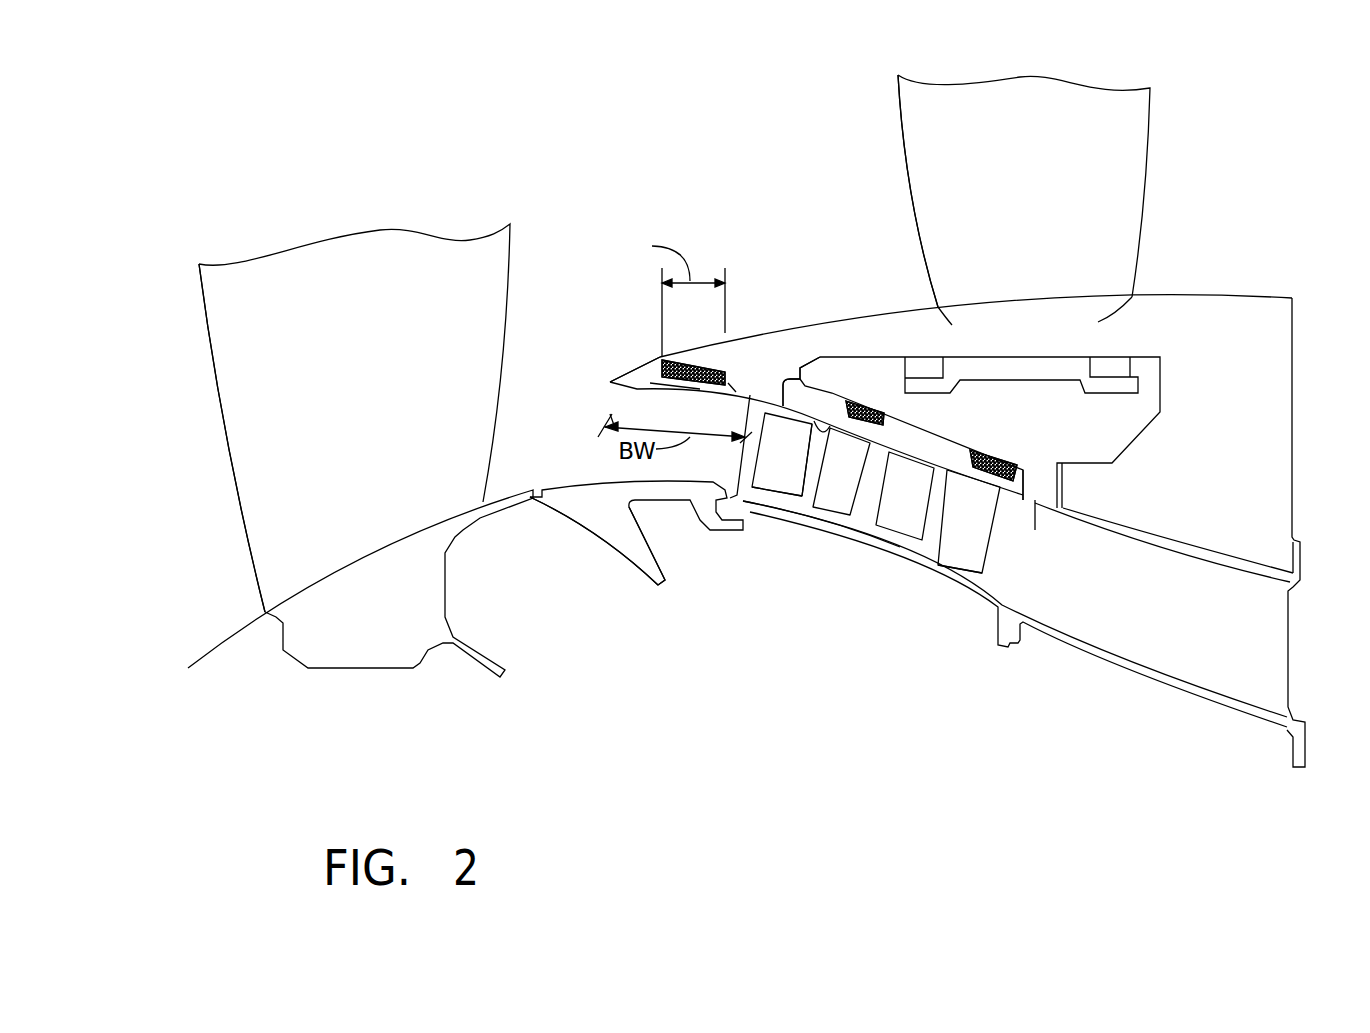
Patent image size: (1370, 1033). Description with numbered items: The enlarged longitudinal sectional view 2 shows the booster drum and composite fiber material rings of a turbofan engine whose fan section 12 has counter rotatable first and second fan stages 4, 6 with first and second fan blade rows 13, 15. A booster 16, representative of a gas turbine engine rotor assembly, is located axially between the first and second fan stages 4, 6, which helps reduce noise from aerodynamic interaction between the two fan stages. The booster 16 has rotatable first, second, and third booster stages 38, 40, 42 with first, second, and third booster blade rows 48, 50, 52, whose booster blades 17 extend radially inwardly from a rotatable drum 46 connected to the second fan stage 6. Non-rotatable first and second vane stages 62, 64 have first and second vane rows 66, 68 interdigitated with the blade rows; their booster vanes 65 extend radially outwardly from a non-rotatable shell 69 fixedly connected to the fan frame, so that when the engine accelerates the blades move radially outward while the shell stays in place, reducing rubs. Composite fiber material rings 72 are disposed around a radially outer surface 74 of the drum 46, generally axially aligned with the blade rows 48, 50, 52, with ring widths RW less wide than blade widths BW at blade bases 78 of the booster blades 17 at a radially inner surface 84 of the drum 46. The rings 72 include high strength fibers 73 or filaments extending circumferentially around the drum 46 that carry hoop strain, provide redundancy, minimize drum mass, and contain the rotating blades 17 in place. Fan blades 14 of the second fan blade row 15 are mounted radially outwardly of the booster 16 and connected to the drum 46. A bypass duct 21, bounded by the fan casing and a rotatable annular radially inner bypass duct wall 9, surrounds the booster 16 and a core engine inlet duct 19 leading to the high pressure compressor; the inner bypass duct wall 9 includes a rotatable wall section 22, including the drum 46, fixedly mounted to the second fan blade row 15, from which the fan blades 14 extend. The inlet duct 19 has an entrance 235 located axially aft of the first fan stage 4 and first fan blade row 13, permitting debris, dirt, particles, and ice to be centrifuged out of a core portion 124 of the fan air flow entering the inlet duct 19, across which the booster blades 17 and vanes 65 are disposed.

The turbine section 2 is at (790, 262).
The first fan stage 4 is at (338, 210).
The second fan stage 6 is at (1017, 68).
The radially inner bypass duct wall 9 is at (787, 425).
The fan section 12 is at (657, 107).
The first fan blade row 13 is at (217, 382).
The fan blades 14 is at (355, 386).
The second fan blade row 15 is at (903, 153).
The booster 16 is at (789, 617).
The booster blades 17 is at (675, 481).
The core engine inlet duct 19 is at (597, 457).
The bypass duct 21 is at (657, 226).
The rotatable wall section 22 is at (610, 382).
The first booster stage 38 is at (641, 385).
The second booster stage 40 is at (856, 454).
The third booster stage 42 is at (1030, 449).
The rotatable drum 46 is at (958, 411).
The first booster blade row 48 is at (630, 473).
The second booster blade row 50 is at (830, 520).
The third booster blade row 52 is at (953, 563).
The first vane stage 62 is at (813, 380).
The second vane stage 64 is at (928, 457).
The booster vanes 65 is at (753, 479).
The first vane row 66 is at (772, 497).
The second vane row 68 is at (897, 543).
The non-rotatable shell 69 is at (823, 560).
The composite fiber material rings 72 is at (650, 380).
The fibers 73 is at (700, 386).
The radially outer surface 74 is at (677, 358).
The blade bases 78 is at (733, 383).
The radially inner surface 84 is at (850, 408).
The core portion 124 is at (562, 437).
The entrance 235 is at (604, 420).